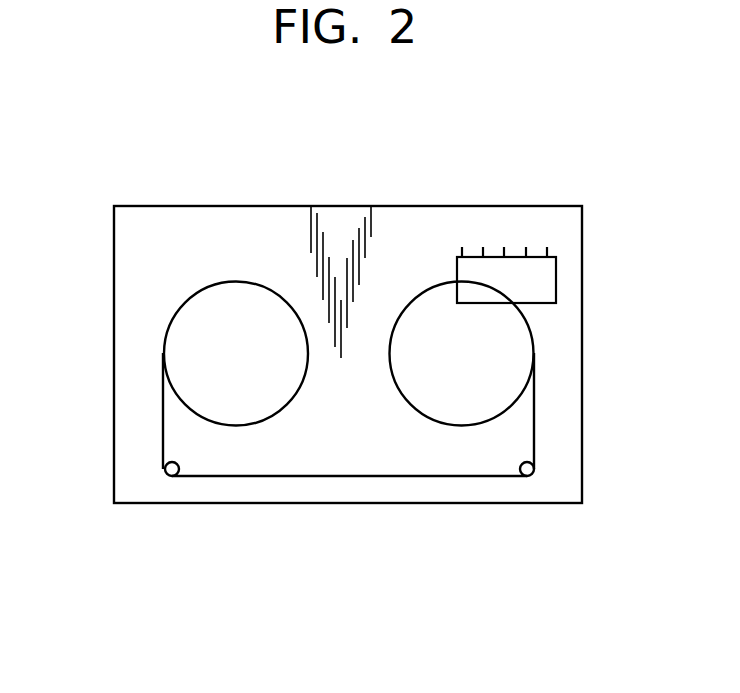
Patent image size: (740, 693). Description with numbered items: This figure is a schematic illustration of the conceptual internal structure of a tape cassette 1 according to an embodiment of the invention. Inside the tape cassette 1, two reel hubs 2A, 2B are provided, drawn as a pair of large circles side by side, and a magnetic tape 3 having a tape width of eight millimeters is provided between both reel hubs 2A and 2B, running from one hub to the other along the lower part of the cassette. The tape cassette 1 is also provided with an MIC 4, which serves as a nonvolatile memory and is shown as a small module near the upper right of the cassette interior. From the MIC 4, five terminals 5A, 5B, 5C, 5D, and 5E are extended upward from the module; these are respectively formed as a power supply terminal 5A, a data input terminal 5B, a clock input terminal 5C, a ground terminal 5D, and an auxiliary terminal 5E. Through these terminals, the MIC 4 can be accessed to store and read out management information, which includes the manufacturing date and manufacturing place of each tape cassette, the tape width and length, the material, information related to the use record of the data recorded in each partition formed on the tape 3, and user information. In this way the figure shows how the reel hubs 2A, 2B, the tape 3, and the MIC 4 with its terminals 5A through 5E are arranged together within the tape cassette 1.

The tape cassette 1 is at (271, 206).
The reel hub 2A is at (165, 341).
The reel hub 2B is at (532, 341).
The magnetic tape 3 is at (164, 427).
The MIC 4 is at (556, 278).
The power supply terminal 5A is at (547, 247).
The data input terminal 5B is at (526, 247).
The clock input terminal 5C is at (504, 247).
The ground terminal 5D is at (483, 247).
The auxiliary terminal 5E is at (462, 247).